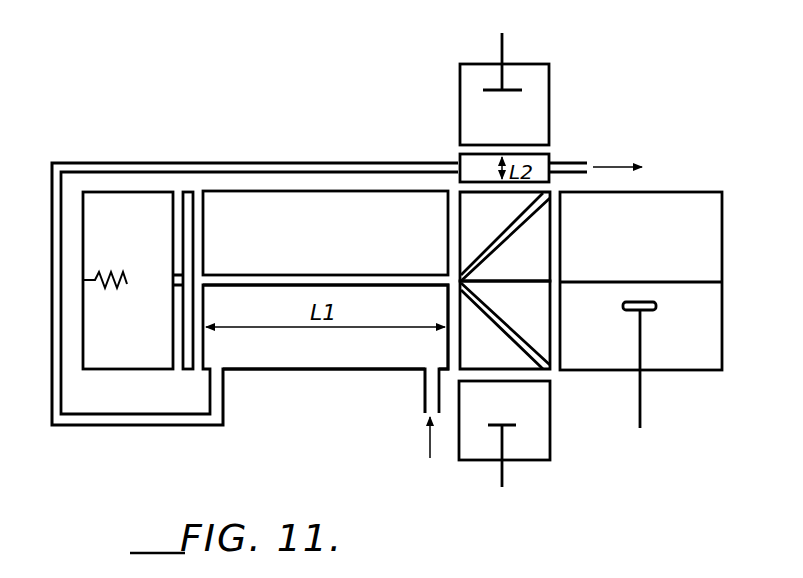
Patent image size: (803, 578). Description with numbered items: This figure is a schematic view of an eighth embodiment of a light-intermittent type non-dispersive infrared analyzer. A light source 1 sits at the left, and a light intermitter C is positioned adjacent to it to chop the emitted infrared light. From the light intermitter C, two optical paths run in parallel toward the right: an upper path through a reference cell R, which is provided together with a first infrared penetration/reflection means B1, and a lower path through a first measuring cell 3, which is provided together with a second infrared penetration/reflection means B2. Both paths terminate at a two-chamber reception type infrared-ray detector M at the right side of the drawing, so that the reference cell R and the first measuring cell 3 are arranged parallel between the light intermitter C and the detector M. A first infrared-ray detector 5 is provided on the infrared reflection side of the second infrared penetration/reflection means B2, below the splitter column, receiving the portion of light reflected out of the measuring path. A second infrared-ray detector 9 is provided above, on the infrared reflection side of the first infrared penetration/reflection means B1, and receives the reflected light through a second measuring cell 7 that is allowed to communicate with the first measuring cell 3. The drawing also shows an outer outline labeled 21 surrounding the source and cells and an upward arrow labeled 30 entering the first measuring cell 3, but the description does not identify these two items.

The light source 1 is at (146, 370).
The first measuring cell 3 is at (334, 370).
The first infrared-ray detector 5 is at (535, 460).
The second measuring cell 7 is at (551, 150).
The second infrared-ray detector 9 is at (551, 90).
The housing 21 is at (112, 426).
The light input 30 is at (423, 457).
The light intermitter C is at (190, 190).
The reference cell R is at (330, 246).
The first infrared penetration/reflection means B1 is at (536, 222).
The second infrared penetration/reflection means B2 is at (530, 346).
The two-chamber reception type infrared-ray detector M is at (683, 192).